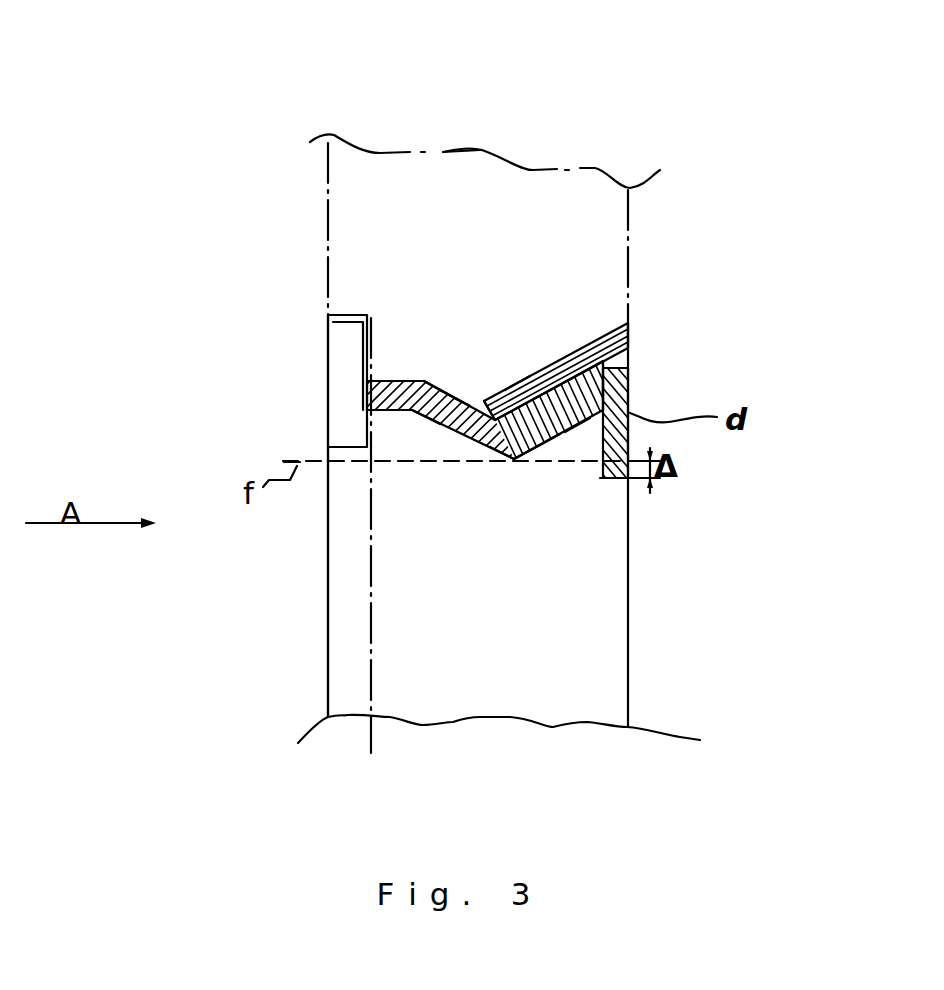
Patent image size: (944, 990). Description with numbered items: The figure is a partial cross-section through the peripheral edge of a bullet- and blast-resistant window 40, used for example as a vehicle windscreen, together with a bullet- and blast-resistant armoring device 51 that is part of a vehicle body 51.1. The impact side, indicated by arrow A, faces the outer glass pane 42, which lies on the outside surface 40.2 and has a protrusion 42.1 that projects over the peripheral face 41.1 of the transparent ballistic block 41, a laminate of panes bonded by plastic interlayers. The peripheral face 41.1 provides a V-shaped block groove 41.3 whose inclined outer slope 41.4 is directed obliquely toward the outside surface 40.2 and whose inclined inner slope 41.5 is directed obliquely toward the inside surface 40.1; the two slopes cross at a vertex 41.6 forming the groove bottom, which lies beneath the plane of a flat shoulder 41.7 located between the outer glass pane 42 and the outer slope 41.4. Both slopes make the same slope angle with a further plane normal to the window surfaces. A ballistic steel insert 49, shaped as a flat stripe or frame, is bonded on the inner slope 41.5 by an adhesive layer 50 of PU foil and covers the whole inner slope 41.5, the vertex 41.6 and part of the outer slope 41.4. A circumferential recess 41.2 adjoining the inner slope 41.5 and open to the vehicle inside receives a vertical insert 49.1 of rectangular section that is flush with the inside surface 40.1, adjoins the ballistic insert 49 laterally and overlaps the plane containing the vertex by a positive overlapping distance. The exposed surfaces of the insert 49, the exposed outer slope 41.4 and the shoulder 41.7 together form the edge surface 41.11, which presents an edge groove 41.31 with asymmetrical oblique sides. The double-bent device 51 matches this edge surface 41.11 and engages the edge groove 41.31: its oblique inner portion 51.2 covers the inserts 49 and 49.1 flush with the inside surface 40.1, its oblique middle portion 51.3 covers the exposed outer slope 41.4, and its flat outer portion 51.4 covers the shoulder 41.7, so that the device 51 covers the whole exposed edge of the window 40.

The bullet- and blast-resistant window 40 is at (365, 537).
The inside surface 40.1 is at (640, 651).
The outside surface 40.2 is at (318, 396).
The ballistic block 41 is at (552, 693).
The peripheral face 41.1 is at (531, 474).
The edge surface 41.11 is at (458, 392).
The circumferential recess 41.2 is at (630, 438).
The block groove 41.3 is at (517, 380).
The edge groove 41.31 is at (488, 390).
The outer slope 41.4 is at (417, 440).
The inner slope 41.5 is at (557, 455).
The vertex 41.6 is at (499, 474).
The flat shoulder 41.7 is at (381, 425).
The outer glass pane 42 is at (343, 612).
The protrusion 42.1 is at (343, 358).
The ballistic insert 49 is at (630, 368).
The vertical insert 49.1 is at (630, 387).
The adhesive layer 50 is at (578, 441).
The bullet- and blast-resistant armoring device 51 is at (578, 350).
The vehicle body 51.1 is at (453, 163).
The oblique inner portion 51.2 is at (628, 324).
The oblique middle portion 51.3 is at (443, 378).
The flat outer portion 51.4 is at (407, 378).